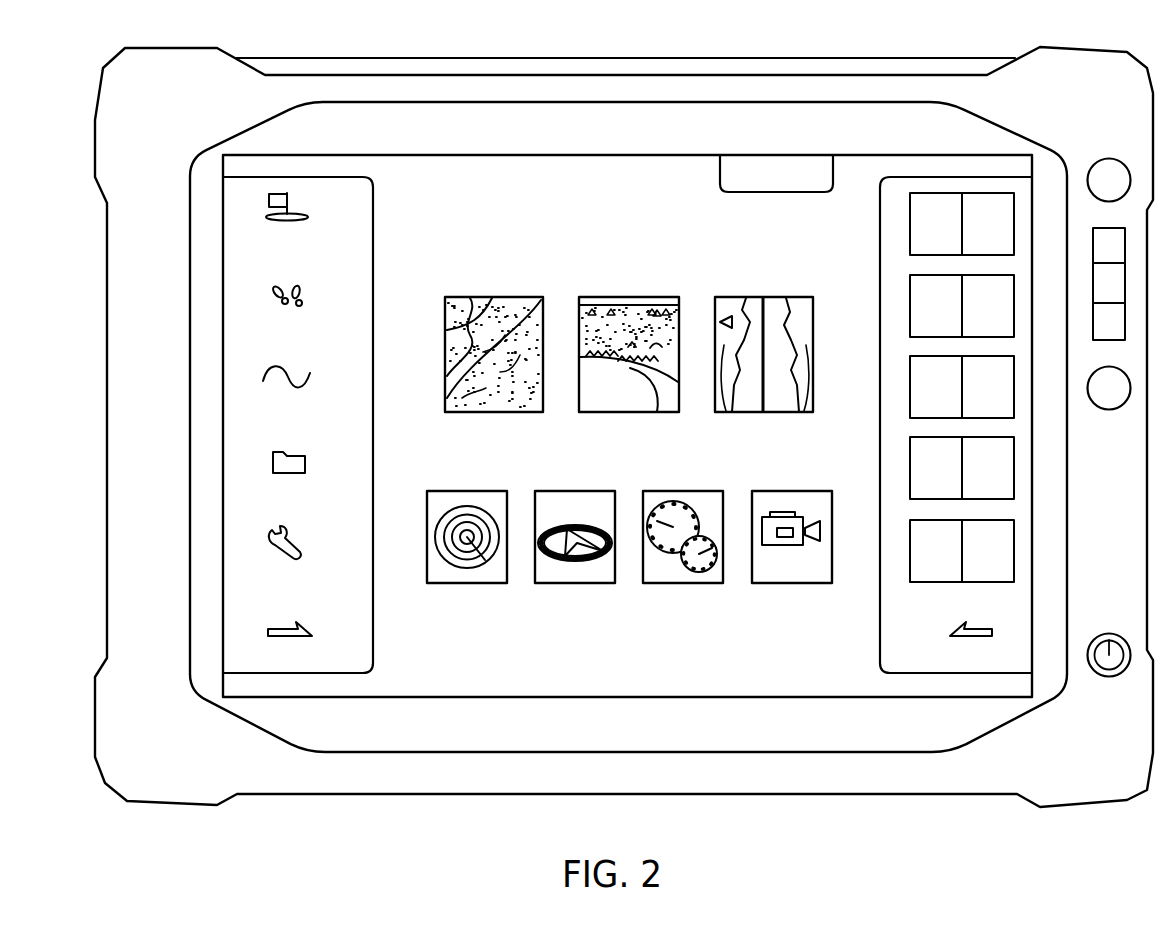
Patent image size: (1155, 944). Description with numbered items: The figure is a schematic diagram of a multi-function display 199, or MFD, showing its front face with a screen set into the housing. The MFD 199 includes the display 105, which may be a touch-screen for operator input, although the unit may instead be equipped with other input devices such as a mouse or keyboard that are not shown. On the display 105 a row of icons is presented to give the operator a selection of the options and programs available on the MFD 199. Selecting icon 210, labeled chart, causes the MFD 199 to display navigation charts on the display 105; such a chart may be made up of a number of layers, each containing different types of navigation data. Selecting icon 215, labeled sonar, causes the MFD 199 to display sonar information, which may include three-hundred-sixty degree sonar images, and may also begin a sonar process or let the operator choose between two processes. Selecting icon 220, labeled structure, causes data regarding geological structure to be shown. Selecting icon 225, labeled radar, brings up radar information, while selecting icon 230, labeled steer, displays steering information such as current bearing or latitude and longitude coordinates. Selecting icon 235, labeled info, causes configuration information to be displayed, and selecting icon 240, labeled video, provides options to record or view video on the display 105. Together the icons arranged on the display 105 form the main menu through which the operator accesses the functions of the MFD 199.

The display 105 is at (608, 396).
The multi-function display 199 is at (367, 772).
The icon 210 is at (467, 307).
The icon 215 is at (602, 307).
The icon 220 is at (752, 307).
The icon 225 is at (478, 497).
The icon 230 is at (605, 505).
The icon 235 is at (655, 500).
The icon 240 is at (768, 503).